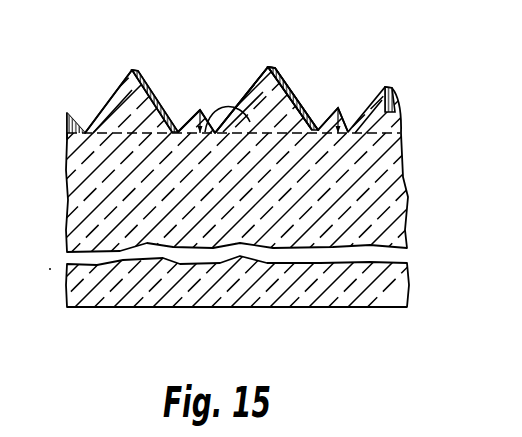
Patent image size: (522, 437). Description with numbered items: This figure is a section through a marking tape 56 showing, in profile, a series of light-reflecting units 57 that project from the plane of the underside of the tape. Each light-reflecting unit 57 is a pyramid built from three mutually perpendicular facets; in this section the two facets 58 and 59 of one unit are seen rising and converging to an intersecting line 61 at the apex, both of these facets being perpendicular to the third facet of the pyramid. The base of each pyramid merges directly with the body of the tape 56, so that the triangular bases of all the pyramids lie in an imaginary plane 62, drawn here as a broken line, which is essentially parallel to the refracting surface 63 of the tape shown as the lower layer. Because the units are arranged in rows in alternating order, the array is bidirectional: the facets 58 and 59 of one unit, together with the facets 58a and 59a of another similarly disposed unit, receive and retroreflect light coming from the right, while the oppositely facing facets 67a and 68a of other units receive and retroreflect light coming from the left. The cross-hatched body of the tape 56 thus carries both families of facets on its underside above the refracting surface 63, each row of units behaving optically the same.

The marking tape 56 is at (406, 220).
The light-reflecting unit 57 is at (240, 88).
The facet 58 is at (302, 98).
The facet 58a is at (160, 104).
The facet 59 is at (253, 80).
The facet 59a is at (95, 110).
The intersecting line 61 is at (281, 86).
The imaginary plane 62 is at (386, 151).
The refracting surface 63 is at (383, 308).
The facet 67a is at (250, 122).
The facet 68a is at (199, 110).